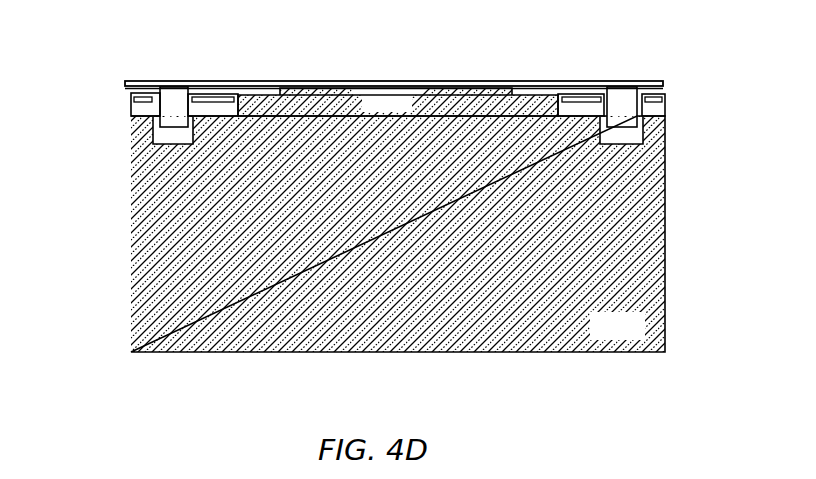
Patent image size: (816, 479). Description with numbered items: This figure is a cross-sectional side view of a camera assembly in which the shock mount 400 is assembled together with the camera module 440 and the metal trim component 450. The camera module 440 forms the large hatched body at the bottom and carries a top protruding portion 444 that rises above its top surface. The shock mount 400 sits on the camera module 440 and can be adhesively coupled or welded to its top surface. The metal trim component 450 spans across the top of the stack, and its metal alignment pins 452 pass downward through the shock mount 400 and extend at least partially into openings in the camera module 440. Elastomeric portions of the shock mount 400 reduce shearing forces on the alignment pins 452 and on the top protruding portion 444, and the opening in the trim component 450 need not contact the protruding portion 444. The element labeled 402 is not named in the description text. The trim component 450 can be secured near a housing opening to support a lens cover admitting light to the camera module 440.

The shock mount 400 is at (665, 115).
The contact pad 402 is at (145, 93).
The camera module 440 is at (633, 333).
The top protruding portion 444 is at (404, 111).
The metal trim component 450 is at (540, 80).
The metal alignment pins 452 is at (657, 93).